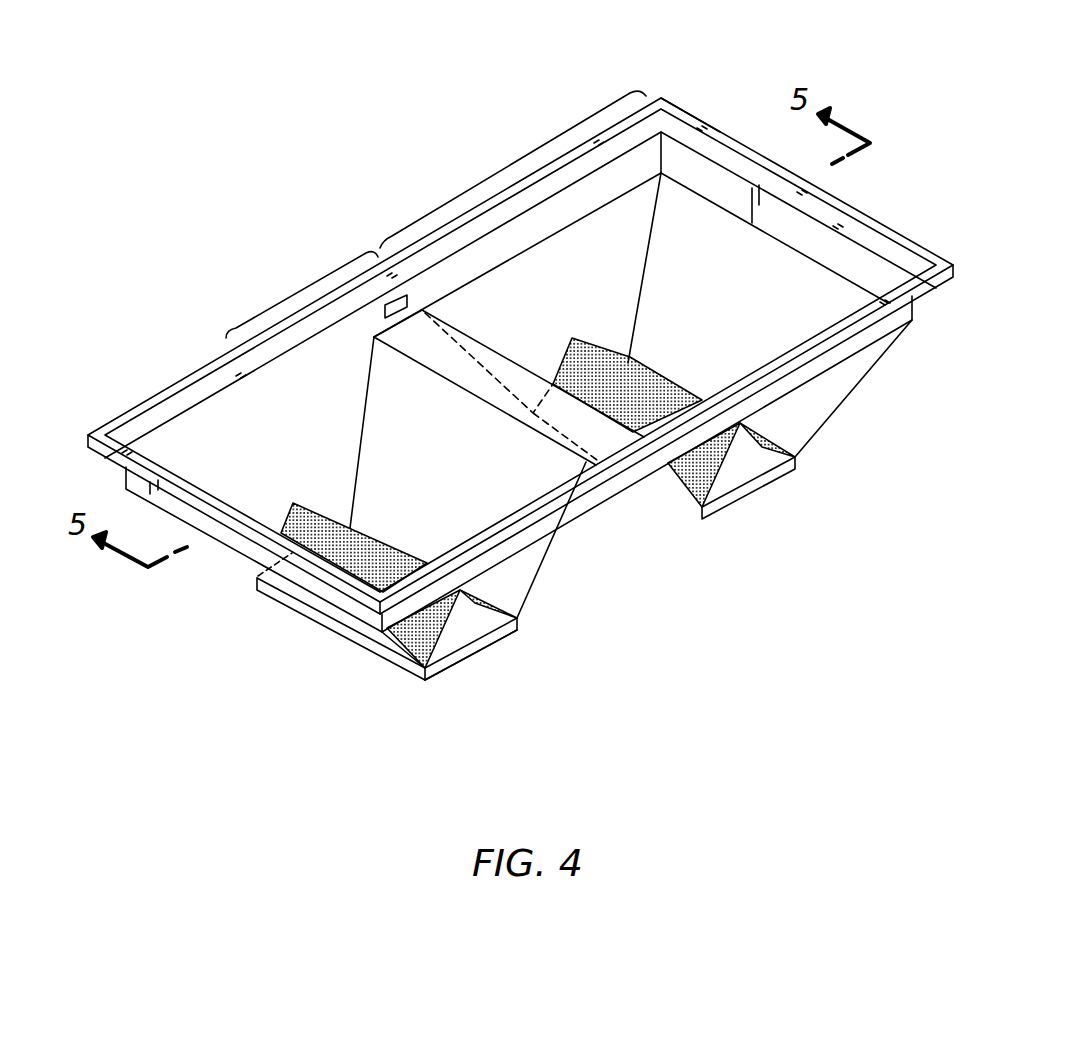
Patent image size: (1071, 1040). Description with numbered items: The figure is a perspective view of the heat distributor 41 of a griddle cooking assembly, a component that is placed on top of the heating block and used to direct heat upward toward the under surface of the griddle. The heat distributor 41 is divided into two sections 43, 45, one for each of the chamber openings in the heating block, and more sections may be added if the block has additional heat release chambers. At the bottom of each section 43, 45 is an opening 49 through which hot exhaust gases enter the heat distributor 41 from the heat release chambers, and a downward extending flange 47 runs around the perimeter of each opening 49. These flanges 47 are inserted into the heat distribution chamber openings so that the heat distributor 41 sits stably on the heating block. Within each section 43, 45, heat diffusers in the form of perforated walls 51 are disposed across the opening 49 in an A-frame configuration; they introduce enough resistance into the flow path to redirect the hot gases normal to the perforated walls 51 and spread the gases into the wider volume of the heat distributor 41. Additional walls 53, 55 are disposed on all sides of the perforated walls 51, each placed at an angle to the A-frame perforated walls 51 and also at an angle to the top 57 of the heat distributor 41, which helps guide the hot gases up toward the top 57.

The heat distributor 41 is at (364, 188).
The section 43 is at (226, 338).
The section 45 is at (512, 154).
The downward extending flange 47 is at (398, 672).
The opening 49 is at (452, 688).
The perforated walls 51 is at (298, 516).
The additional wall 53 is at (262, 500).
The additional wall 55 is at (508, 492).
The top 57 is at (688, 102).